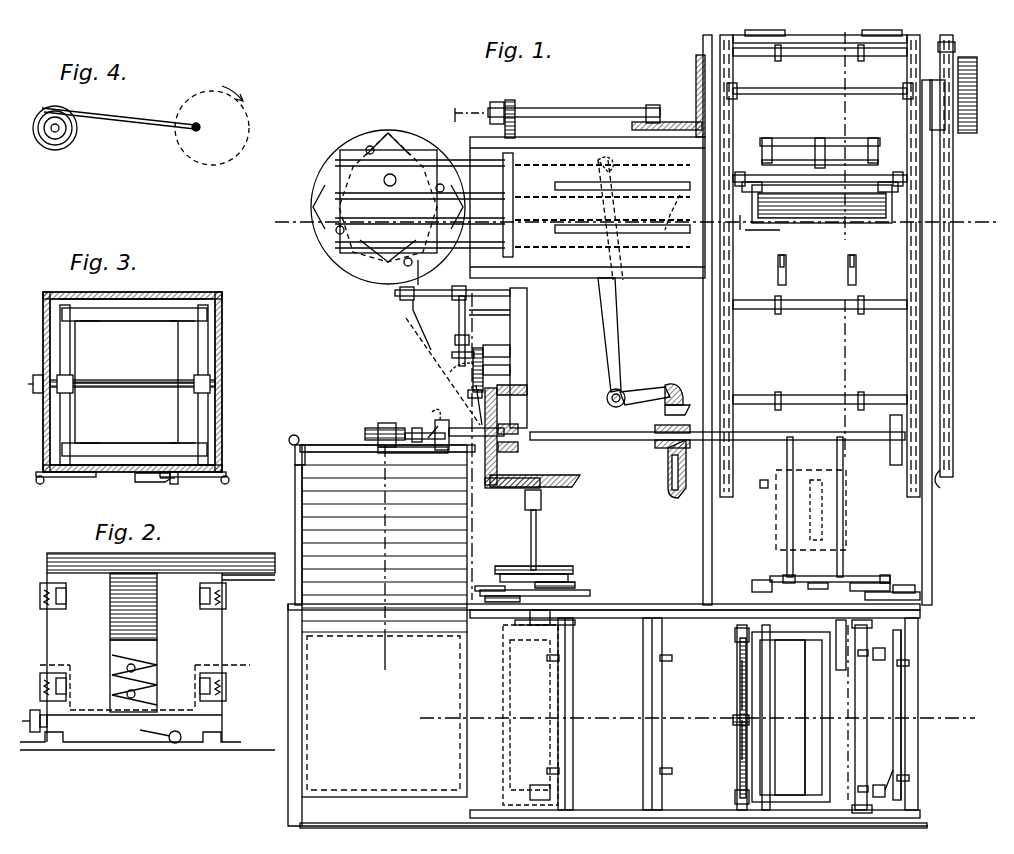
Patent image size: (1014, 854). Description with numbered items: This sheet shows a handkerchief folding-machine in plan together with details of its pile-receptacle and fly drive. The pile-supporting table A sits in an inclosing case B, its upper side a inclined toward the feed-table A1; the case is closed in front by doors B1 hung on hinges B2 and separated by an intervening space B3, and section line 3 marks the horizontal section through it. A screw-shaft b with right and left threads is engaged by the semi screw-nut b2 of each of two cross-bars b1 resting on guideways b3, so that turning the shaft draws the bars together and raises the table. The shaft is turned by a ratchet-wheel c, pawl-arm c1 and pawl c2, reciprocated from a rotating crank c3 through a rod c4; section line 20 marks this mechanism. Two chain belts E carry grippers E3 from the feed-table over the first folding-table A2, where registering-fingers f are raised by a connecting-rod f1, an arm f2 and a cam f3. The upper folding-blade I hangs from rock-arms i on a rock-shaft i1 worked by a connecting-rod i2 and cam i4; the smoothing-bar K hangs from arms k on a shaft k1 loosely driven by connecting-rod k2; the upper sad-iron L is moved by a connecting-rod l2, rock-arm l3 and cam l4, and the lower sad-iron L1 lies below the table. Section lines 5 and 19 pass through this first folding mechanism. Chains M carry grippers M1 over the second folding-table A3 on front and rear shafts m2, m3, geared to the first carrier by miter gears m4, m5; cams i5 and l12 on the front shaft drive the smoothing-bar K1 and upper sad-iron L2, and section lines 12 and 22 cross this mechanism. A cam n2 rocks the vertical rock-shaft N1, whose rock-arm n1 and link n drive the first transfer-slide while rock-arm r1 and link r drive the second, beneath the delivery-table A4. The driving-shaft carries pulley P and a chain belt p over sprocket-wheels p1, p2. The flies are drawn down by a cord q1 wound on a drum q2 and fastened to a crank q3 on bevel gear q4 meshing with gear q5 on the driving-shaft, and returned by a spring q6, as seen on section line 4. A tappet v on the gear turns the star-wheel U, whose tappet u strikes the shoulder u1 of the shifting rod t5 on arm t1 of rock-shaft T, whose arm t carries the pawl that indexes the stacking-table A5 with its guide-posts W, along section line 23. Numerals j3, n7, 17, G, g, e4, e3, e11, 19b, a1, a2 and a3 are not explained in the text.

In FIG. 4, the cord or strap q1 is at (118, 126).
In FIG. 1, the cord or strap q1 is at (574, 102).
In FIG. 4, the drum q2 is at (50, 126).
In FIG. 1, the drum q2 is at (520, 108).
In FIG. 4, the crank q3 is at (200, 128).
In FIG. 1, the crank q3 is at (650, 105).
In FIG. 1, the bevel gear-wheel q4 is at (634, 127).
In FIG. 1, the bevel gear-wheel q5 is at (700, 60).
In FIG. 1, the spring q6 is at (516, 122).
In FIG. 1, the section line 4 is at (664, 103).
In FIG. 1, the section line 22 is at (634, 228).
In FIG. 1, the section line 5 is at (695, 717).
In FIG. 1, the section line 23 is at (447, 430).
In FIG. 1, the stacking-table A5 is at (330, 136).
In FIG. 1, the upright guide-posts W is at (318, 242).
In FIG. 1, the link n is at (417, 184).
In FIG. 1, the delivery-table A4 is at (520, 207).
In FIG. 1, the link r is at (612, 170).
In FIG. 1, the rock-arm r1 is at (613, 342).
In FIG. 1, the rock-shaft T is at (452, 286).
In FIG. 1, the rock-arm t is at (421, 325).
In FIG. 1, the rock-arm t1 is at (458, 324).
In FIG. 1, the shifting rod t5 is at (482, 327).
In FIG. 1, the star-wheel U is at (491, 368).
In FIG. 1, the tooth or tappet u is at (453, 349).
In FIG. 1, the shoulder u1 is at (461, 380).
In FIG. 1, the tooth or tappet v is at (444, 371).
In FIG. 1, the second folding-table A3 is at (622, 320).
In FIG. 1, the miter gear-wheel m4 is at (512, 436).
In FIG. 1, the front shaft m2 is at (701, 442).
In FIG. 1, the miter gear-wheel m5 is at (549, 522).
In FIG. 1, the gear j3 is at (550, 566).
In FIG. 1, the cam f3 is at (574, 586).
In FIG. 1, the connecting-rod f1 is at (535, 594).
In FIG. 1, the forwardly-projecting arm f2 is at (470, 590).
In FIG. 1, the registering-fingers f is at (545, 705).
In FIG. 1, the horizontal rock-arm n1 is at (645, 388).
In FIG. 1, the vertical rock-shaft N1 is at (610, 406).
In FIG. 1, the cam n2 is at (664, 455).
In FIG. 1, the carrying belts or chains M is at (720, 337).
In FIG. 1, the grippers M1 is at (820, 220).
In FIG. 1, the section line 12 is at (841, 129).
In FIG. 1, the rear shaft m3 is at (820, 97).
In FIG. 1, the smoothing-bar K1 is at (820, 162).
In FIG. 1, the upper sad-iron L2 is at (816, 225).
In FIG. 1, the lower sad-iron L1 is at (890, 230).
In FIG. 1, the section line 19 is at (853, 380).
In FIG. 1, the chain belt p is at (944, 320).
In FIG. 1, the sprocket-wheel p1 is at (946, 35).
In FIG. 1, the pulley P is at (958, 95).
In FIG. 1, the sprocket-wheel p2 is at (944, 489).
In FIG. 1, the connecting-rod l2 is at (811, 507).
In FIG. 1, the cam l12 is at (880, 474).
In FIG. 1, the cam i5 is at (758, 476).
In FIG. 1, the rock-arm l3 is at (762, 580).
In FIG. 1, the pin n7 is at (786, 574).
In FIG. 1, the cam l4 is at (886, 582).
In FIG. 1, the connecting-rod i2 is at (904, 580).
In FIG. 1, the cam i4 is at (920, 598).
In FIG. 1, the block 17 is at (818, 579).
In FIG. 3, the inclosing case B is at (135, 386).
In FIG. 2, the inclosing case B is at (150, 564).
In FIG. 1, the inclosing case B is at (375, 597).
In FIG. 1, the section line 20 is at (385, 412).
In FIG. 2, the hinges B2 is at (130, 643).
In FIG. 1, the hinges B2 is at (292, 442).
In FIG. 3, the doors B1 is at (75, 470).
In FIG. 2, the doors B1 is at (134, 657).
In FIG. 1, the doors B1 is at (297, 492).
In FIG. 2, the feed-table A1 is at (253, 648).
In FIG. 1, the feed-table A1 is at (599, 715).
In FIG. 3, the ratchet-wheel c is at (32, 373).
In FIG. 2, the ratchet-wheel c is at (134, 680).
In FIG. 1, the ratchet-wheel c is at (377, 435).
In FIG. 1, the pawl-arm c1 is at (410, 453).
In FIG. 1, the pawl c2 is at (415, 430).
In FIG. 1, the rotating crank c3 is at (469, 426).
In FIG. 1, the rod c4 is at (433, 415).
In FIG. 1, the carrying or chain belts E is at (607, 716).
In FIG. 1, the grippers E3 is at (741, 714).
In FIG. 1, the first folding-table A2 is at (560, 715).
In FIG. 1, the smoothing or retaining bar K is at (770, 688).
In FIG. 1, the hangers or arms k is at (738, 790).
In FIG. 1, the transverse shaft k1 is at (745, 696).
In FIG. 1, the connecting-rod k2 is at (745, 722).
In FIG. 1, the rock-arms i is at (790, 719).
In FIG. 1, the rock-shaft i1 is at (795, 717).
In FIG. 1, the upper folding-blade I is at (846, 704).
In FIG. 1, the upper sad-iron L is at (855, 755).
In FIG. 1, the guides G is at (871, 722).
In FIG. 1, the pin g is at (891, 774).
In FIG. 1, the rod e4 is at (905, 662).
In FIG. 1, the rod e3 is at (918, 700).
In FIG. 1, the block e11 is at (905, 716).
In FIG. 1, the pin 19b is at (848, 805).
In FIG. 3, the guideways b3 is at (140, 296).
In FIG. 3, the inclined upper side a is at (134, 382).
In FIG. 2, the inclined upper side a is at (141, 608).
In FIG. 3, the lugs a1 is at (137, 380).
In FIG. 3, the frame a2 is at (126, 382).
In FIG. 3, the cross-bars b1 is at (134, 385).
In FIG. 3, the screw-shaft b is at (133, 382).
In FIG. 2, the screw-shaft b is at (27, 720).
In FIG. 3, the semi screw-nut b2 is at (75, 378).
In FIG. 3, the lever a3 is at (145, 484).
In FIG. 2, the lever a3 is at (156, 728).
In FIG. 2, the intervening space B3 is at (134, 707).
In FIG. 2, the section line 3 is at (137, 683).
In FIG. 2, the pile-supporting table A is at (141, 740).